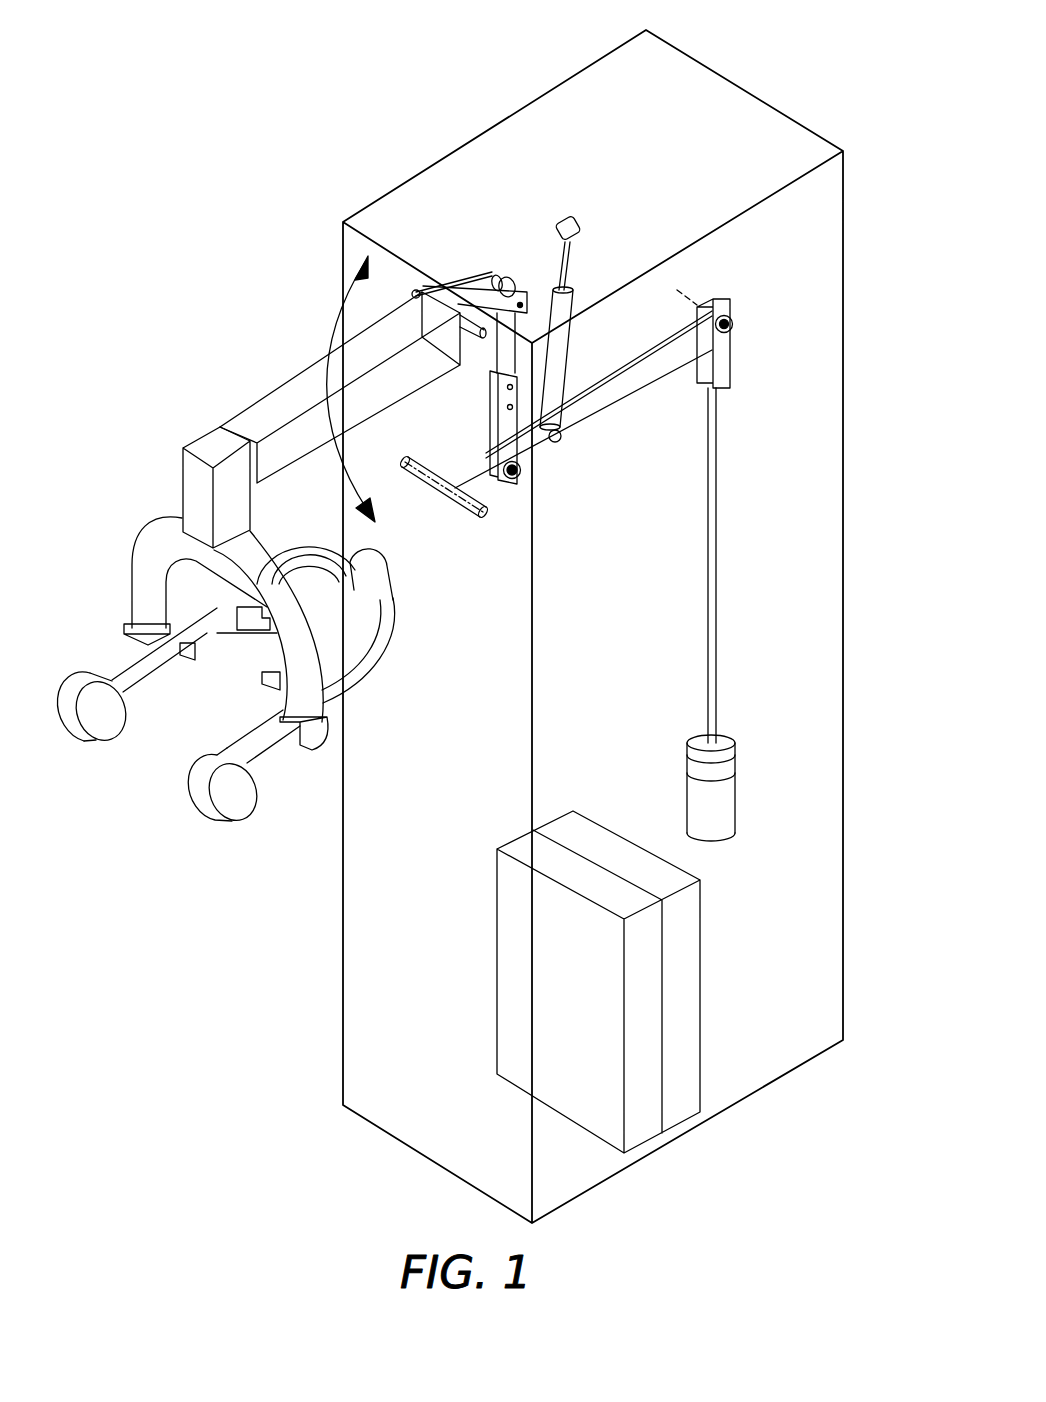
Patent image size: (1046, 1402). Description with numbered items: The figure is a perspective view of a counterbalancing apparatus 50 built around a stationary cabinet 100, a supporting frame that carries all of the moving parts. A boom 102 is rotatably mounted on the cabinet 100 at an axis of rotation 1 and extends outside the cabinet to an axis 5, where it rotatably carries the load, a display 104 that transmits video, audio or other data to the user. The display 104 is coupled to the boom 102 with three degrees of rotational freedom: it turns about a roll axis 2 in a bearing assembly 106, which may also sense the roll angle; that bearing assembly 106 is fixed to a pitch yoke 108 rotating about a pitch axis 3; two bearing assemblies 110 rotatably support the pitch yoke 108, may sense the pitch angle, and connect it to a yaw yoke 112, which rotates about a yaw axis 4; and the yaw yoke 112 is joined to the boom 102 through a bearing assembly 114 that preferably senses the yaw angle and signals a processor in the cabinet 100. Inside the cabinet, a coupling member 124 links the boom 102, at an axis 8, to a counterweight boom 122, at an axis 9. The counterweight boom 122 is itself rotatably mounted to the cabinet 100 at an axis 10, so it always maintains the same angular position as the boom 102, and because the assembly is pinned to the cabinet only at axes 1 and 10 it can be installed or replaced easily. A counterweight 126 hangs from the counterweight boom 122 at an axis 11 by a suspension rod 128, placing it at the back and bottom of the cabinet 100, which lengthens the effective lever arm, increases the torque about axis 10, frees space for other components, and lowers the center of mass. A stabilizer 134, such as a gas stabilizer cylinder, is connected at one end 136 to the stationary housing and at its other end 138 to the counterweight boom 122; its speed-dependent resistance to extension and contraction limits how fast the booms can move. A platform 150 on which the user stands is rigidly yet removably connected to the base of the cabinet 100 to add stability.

The gravity compensation apparatus 50 is at (255, 145).
The cabinet 100 is at (844, 232).
The boom 102 is at (283, 400).
The display 104 is at (297, 572).
The bearing assembly 106 is at (383, 567).
The pitch yoke 108 is at (367, 673).
The bearing assemblies 110 is at (125, 632).
The yaw yoke 112 is at (155, 548).
The bearing assembly 114 is at (184, 485).
The counterweight boom 122 is at (645, 365).
The coupling member 124 is at (503, 357).
The counterweight 126 is at (738, 797).
The suspension rod 128 is at (718, 570).
The stabilizer 134 is at (575, 290).
The end of stabilizer 136 is at (567, 218).
The end of stabilizer 138 is at (561, 440).
The platform 150 is at (686, 1012).
The axis of rotation 1 is at (415, 290).
The roll axis 2 is at (142, 730).
The pitch axis 3 is at (352, 758).
The yaw axis 4 is at (213, 737).
The axis 5 is at (287, 500).
The axis 8 is at (492, 274).
The axis 9 is at (520, 478).
The axis 10 is at (478, 520).
The axis 11 is at (733, 332).